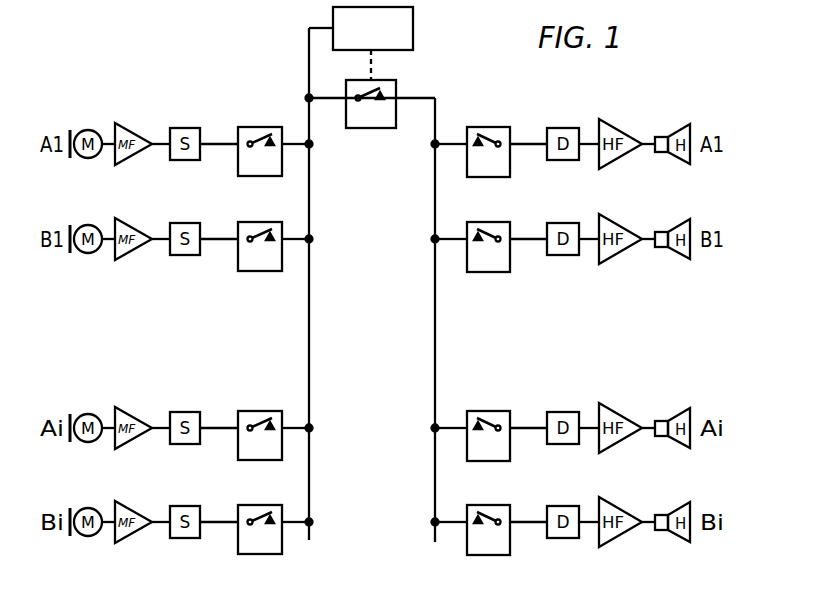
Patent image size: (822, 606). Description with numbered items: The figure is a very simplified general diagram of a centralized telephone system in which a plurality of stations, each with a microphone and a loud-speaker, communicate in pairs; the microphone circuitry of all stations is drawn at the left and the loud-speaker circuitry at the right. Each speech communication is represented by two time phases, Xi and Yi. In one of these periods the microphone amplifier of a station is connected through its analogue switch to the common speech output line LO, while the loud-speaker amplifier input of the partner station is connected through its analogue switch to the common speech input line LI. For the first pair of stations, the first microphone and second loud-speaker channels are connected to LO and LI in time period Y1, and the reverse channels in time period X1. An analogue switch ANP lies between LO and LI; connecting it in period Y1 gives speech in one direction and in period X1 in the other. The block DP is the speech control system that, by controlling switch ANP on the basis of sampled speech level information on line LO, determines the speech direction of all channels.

The speech control system DP is at (373, 28).
The analogue switch ANP is at (371, 89).
The common speech output line LO is at (315, 302).
The common speech input line LI is at (432, 337).
The time period X1 is at (487, 127).
The time period Y1 is at (261, 127).
The time phase Xi is at (487, 411).
The time phase Yi is at (261, 411).